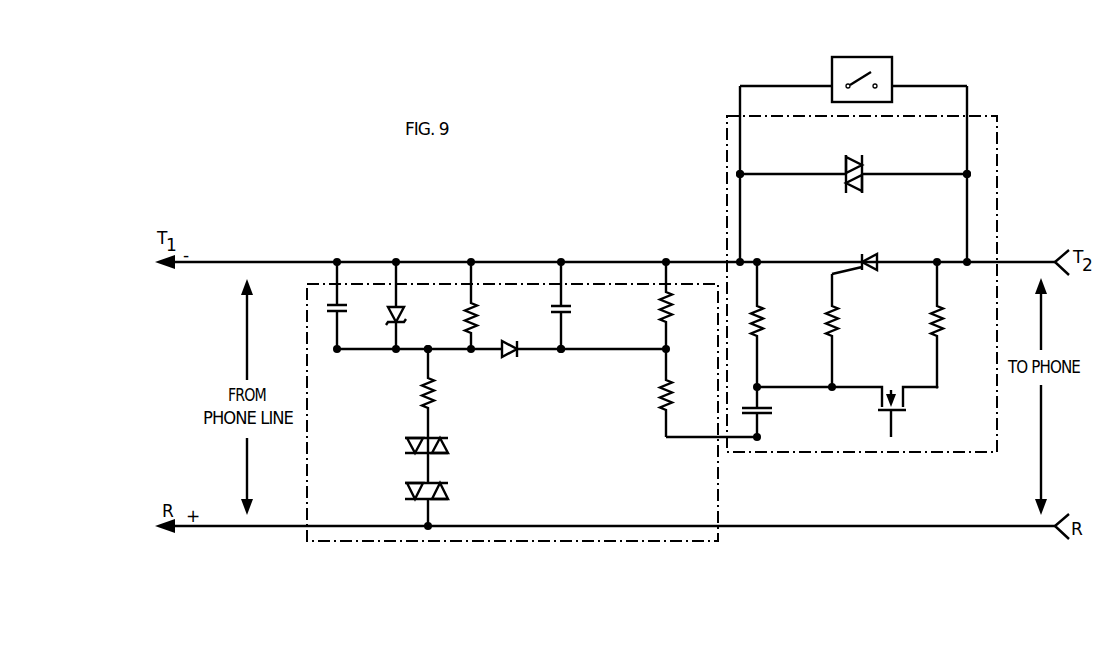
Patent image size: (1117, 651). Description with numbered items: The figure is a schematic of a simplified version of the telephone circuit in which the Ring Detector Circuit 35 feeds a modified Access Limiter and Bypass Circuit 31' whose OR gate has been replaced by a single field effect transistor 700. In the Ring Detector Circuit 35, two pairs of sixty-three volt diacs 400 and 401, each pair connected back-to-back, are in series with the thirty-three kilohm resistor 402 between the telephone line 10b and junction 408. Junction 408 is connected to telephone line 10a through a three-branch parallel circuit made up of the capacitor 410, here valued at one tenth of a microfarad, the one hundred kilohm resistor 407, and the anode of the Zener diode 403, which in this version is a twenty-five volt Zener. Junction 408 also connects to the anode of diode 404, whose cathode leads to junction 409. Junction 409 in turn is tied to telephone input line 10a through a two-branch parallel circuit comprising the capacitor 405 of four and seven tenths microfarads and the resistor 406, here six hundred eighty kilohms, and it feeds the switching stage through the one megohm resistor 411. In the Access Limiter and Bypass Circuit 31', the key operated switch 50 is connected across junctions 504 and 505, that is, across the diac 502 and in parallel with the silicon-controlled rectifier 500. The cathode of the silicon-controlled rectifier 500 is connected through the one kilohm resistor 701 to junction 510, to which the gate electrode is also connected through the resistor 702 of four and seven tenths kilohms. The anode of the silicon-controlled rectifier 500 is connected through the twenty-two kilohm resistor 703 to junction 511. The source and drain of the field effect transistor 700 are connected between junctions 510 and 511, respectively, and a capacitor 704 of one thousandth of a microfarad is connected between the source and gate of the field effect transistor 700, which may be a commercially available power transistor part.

The telephone line 10a is at (192, 264).
The telephone line 10b is at (205, 528).
The ring detector circuit 35 is at (736, 481).
The access limiter and bypass circuit 31' is at (884, 284).
The key operated switch 50 is at (892, 75).
The diac pair 400 is at (412, 460).
The diac pair 401 is at (412, 504).
The resistor 402 is at (411, 393).
The Zener diode 403 is at (408, 305).
The diode 404 is at (512, 362).
The capacitor 405 is at (576, 305).
The resistor 406 is at (649, 305).
The resistor 407 is at (489, 305).
The junction 408 is at (431, 352).
The junction 409 is at (561, 353).
The capacitor 410 is at (347, 305).
The resistor 411 is at (649, 393).
The silicon-controlled rectifier 500 is at (859, 255).
The diac 502 is at (834, 160).
The junction 504 is at (743, 178).
The junction 505 is at (964, 171).
The junction 510 is at (760, 384).
The junction 511 is at (940, 390).
The field effect transistor 700 is at (909, 413).
The resistor 701 is at (774, 324).
The resistor 702 is at (851, 330).
The resistor 703 is at (941, 334).
The capacitor 704 is at (774, 412).